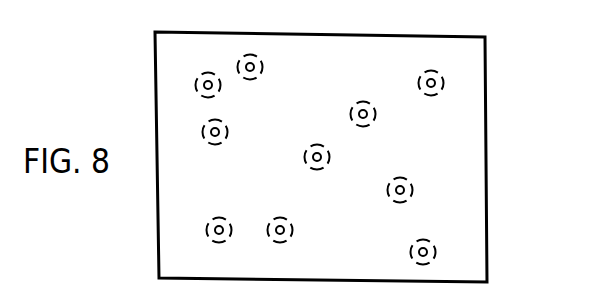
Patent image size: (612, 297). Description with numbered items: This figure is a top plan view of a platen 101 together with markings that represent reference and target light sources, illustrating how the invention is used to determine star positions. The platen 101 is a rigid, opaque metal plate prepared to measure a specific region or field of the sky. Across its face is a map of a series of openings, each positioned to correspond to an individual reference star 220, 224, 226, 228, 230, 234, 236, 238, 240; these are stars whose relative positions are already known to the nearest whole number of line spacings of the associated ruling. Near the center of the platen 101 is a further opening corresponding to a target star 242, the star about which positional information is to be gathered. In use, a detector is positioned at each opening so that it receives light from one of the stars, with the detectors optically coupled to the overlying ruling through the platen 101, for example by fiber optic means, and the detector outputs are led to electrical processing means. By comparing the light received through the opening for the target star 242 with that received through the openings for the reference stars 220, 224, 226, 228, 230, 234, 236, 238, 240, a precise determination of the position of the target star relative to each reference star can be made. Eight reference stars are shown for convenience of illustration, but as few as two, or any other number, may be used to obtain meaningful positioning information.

The platen 101 is at (486, 181).
The reference star 220 is at (262, 59).
The reference star 224 is at (219, 92).
The reference star 226 is at (228, 131).
The reference star 228 is at (221, 217).
The reference star 230 is at (292, 220).
The reference star 234 is at (376, 113).
The reference star 236 is at (430, 71).
The reference star 238 is at (405, 178).
The reference star 240 is at (412, 242).
The target star 242 is at (330, 152).